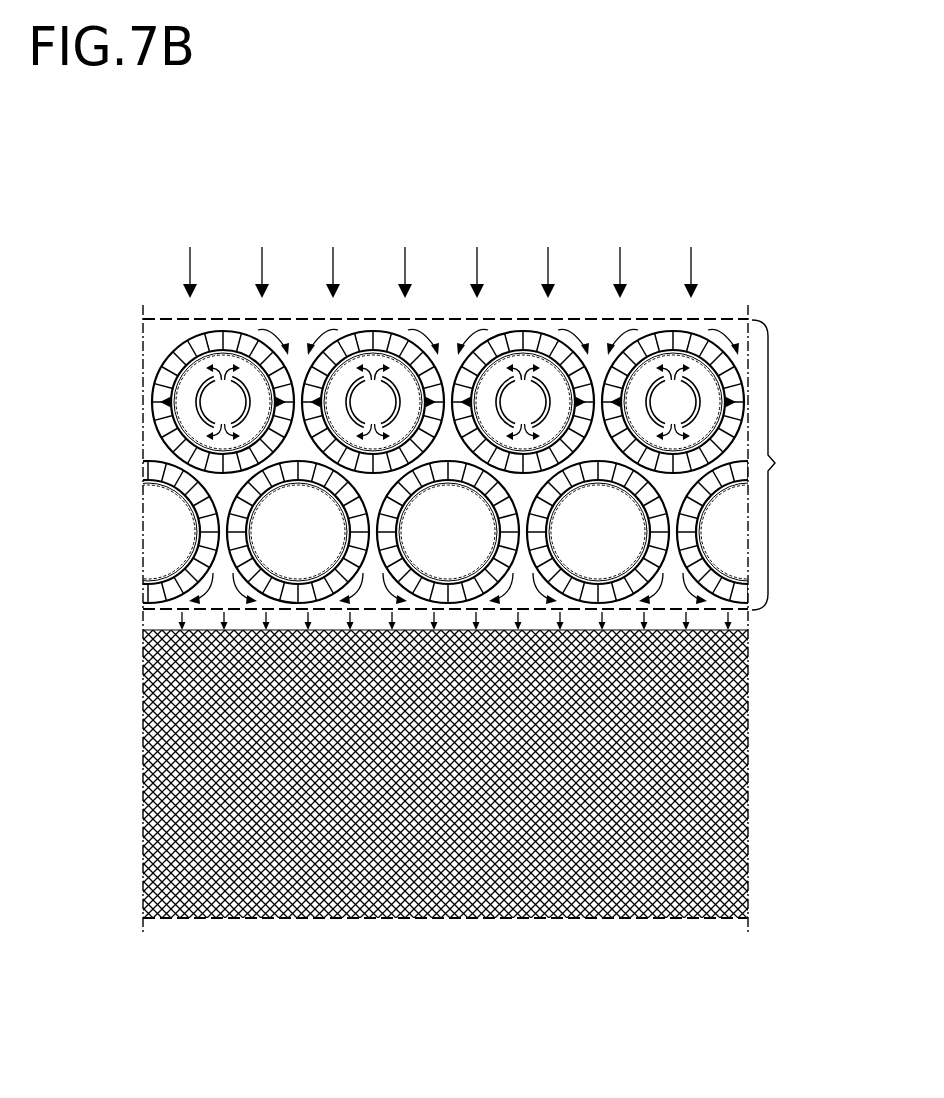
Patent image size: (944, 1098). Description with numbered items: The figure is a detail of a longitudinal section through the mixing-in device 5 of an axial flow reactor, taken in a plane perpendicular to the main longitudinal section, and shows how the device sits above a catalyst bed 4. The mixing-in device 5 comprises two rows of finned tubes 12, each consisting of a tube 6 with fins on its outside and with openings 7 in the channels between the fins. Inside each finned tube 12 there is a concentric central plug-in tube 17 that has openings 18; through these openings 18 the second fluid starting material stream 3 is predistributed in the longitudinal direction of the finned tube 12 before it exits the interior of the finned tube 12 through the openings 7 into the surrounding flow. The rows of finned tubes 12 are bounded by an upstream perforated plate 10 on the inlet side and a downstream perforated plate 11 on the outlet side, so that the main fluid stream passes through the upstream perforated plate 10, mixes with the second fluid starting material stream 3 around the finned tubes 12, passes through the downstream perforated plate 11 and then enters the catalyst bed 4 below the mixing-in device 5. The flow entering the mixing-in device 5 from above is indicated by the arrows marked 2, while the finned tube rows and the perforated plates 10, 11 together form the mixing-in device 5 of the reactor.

The incident light 2 is at (691, 258).
The second fluid starting material stream 3 is at (186, 402).
The catalyst bed 4 is at (725, 768).
The mixing-in device 5 is at (458, 465).
The tube 6 is at (735, 366).
The opening 7 is at (180, 402).
The upstream perforated plate 10 is at (715, 318).
The downstream perforated plate 11 is at (718, 612).
The finned tube 12 is at (135, 533).
The central plug-in tube 17 is at (167, 416).
The opening 18 is at (180, 396).